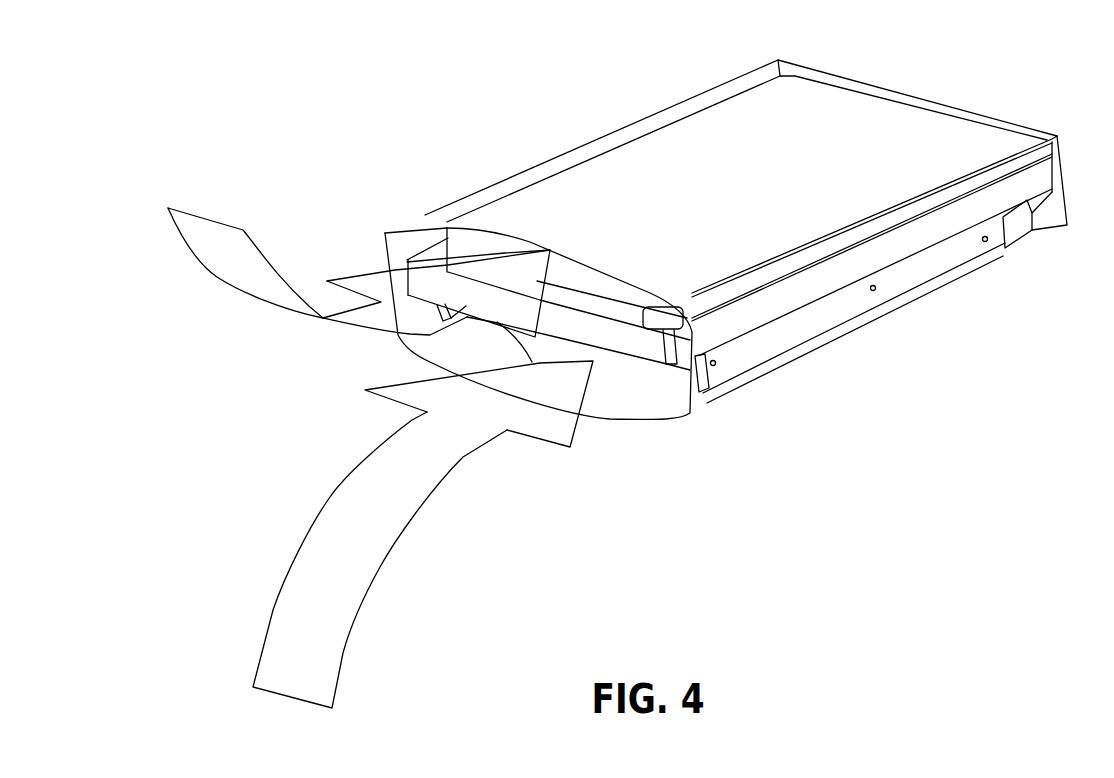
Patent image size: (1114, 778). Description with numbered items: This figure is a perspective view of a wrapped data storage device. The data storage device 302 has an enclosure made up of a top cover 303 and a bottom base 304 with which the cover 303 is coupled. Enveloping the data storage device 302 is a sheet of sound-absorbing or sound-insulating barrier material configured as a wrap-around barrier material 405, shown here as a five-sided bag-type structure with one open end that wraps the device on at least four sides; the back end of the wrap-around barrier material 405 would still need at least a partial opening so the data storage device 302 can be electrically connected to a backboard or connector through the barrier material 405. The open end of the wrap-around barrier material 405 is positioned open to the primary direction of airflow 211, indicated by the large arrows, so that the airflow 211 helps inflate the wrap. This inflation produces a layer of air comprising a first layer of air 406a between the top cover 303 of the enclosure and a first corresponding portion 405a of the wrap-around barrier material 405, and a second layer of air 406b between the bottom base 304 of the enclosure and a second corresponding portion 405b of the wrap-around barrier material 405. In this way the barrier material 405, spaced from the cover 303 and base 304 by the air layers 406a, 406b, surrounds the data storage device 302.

The airflow 211 is at (285, 620).
The data storage device 302 is at (708, 390).
The top cover 303 is at (467, 247).
The bottom base 304 is at (1017, 240).
The wrap-around barrier material 405 is at (603, 135).
The first corresponding portion of the wrap-around barrier material 405a is at (720, 120).
The second corresponding portion of the wrap-around barrier material 405b is at (762, 380).
The first layer of air 406a is at (513, 251).
The second layer of air 406b is at (560, 385).